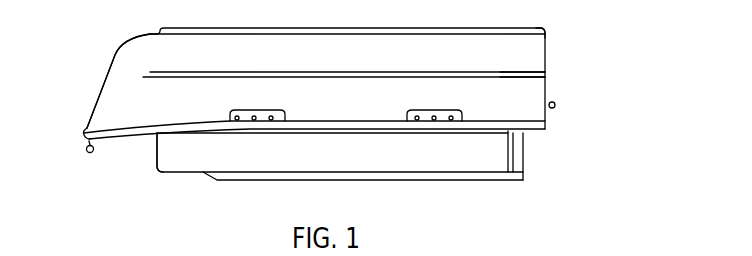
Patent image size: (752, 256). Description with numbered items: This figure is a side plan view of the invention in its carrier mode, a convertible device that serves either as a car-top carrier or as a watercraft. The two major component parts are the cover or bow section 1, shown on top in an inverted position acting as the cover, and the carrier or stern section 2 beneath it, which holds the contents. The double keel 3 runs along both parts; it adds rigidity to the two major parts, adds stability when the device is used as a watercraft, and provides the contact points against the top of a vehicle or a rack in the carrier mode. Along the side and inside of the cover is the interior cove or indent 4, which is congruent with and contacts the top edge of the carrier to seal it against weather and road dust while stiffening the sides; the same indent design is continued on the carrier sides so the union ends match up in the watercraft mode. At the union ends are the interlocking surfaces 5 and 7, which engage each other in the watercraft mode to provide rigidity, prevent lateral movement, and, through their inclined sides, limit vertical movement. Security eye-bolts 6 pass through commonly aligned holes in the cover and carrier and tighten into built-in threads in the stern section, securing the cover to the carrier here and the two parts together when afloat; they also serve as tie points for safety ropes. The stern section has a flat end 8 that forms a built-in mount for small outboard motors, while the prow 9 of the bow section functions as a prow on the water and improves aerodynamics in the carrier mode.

The cover or bow section 1 is at (363, 117).
The carrier or stern section 2 is at (363, 166).
The double keel 3 is at (560, 29).
The interior cove or indent 4 is at (563, 72).
The interlocking surface 5 is at (556, 88).
The security eye-bolt 6 is at (568, 106).
The interlocking surface 7 is at (538, 146).
The flat end 8 is at (145, 159).
The prow 9 is at (97, 76).